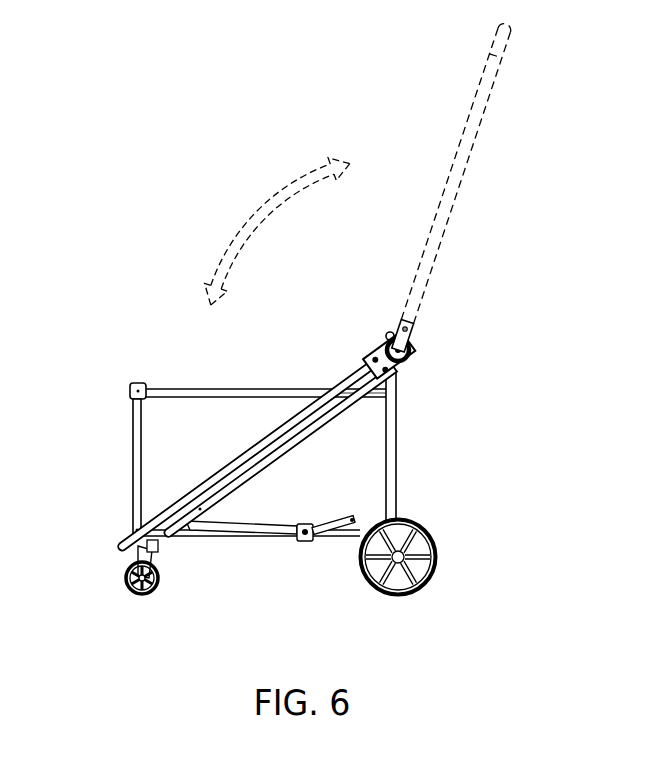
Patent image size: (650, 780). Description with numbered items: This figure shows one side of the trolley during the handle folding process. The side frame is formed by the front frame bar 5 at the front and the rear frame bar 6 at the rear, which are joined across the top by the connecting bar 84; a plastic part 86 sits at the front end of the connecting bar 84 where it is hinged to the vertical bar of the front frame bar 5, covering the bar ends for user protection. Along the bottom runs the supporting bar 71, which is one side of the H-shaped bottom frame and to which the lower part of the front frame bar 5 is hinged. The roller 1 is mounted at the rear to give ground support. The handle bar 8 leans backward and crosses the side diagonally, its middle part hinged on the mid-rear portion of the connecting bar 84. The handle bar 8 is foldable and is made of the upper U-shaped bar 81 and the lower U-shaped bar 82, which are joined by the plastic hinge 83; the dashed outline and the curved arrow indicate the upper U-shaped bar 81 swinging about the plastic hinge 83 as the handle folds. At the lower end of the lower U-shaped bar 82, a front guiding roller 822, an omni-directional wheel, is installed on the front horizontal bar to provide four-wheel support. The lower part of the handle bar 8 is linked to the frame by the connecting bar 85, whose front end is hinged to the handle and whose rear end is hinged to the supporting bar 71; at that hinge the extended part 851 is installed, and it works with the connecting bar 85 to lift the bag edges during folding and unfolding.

The roller 1 is at (435, 530).
The front frame bar 5 is at (130, 455).
The rear frame bar 6 is at (397, 448).
The handle bar 8 is at (420, 343).
The upper U-shaped bar 81 is at (462, 157).
The lower U-shaped bar 82 is at (297, 447).
The plastic hinge 83 is at (380, 347).
The connecting bar 84 is at (238, 392).
The connecting bar 85 is at (258, 518).
The extended part 851 is at (343, 535).
The plastic part 86 is at (132, 382).
The supporting bar 71 is at (238, 542).
The front guiding roller 822 is at (122, 580).